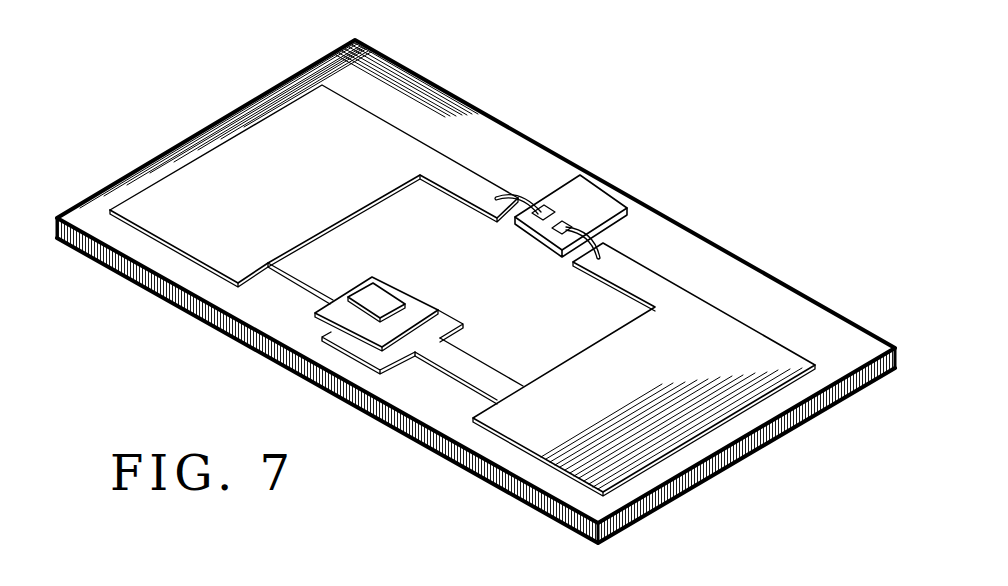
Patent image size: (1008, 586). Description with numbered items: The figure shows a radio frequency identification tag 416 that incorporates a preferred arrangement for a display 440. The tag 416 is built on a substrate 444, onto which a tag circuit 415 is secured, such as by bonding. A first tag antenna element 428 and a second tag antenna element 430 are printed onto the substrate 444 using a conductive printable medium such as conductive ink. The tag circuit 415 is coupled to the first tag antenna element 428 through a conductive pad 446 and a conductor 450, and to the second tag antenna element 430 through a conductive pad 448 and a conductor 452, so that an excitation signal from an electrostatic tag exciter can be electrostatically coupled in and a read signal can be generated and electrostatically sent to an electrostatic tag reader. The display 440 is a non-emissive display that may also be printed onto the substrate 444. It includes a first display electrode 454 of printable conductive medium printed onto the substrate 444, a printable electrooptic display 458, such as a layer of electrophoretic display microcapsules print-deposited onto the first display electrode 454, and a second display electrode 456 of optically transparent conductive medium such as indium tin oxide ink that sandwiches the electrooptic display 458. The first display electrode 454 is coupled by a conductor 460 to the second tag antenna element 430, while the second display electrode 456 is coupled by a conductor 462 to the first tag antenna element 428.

The radio frequency identification tag 416 is at (224, 59).
The substrate 444 is at (346, 64).
The first tag antenna element 428 is at (246, 145).
The conductor 450 is at (519, 197).
The conductive pad 446 is at (549, 208).
The tag circuit 415 is at (629, 188).
The conductive pad 448 is at (592, 200).
The conductor 452 is at (604, 248).
The second tag antenna element 430 is at (733, 332).
The second display electrode 456 is at (384, 298).
The electrooptic display 458 is at (423, 308).
The conductor 462 is at (300, 272).
The display 440 is at (371, 341).
The first display electrode 454 is at (377, 358).
The conductor 460 is at (475, 372).